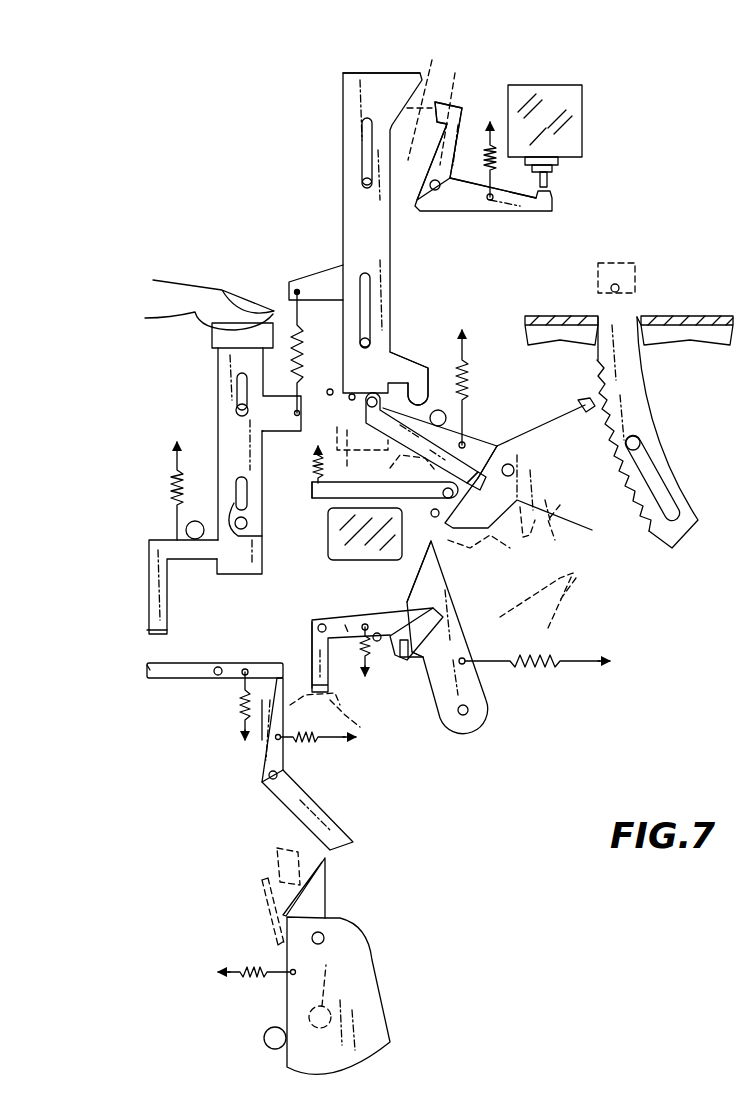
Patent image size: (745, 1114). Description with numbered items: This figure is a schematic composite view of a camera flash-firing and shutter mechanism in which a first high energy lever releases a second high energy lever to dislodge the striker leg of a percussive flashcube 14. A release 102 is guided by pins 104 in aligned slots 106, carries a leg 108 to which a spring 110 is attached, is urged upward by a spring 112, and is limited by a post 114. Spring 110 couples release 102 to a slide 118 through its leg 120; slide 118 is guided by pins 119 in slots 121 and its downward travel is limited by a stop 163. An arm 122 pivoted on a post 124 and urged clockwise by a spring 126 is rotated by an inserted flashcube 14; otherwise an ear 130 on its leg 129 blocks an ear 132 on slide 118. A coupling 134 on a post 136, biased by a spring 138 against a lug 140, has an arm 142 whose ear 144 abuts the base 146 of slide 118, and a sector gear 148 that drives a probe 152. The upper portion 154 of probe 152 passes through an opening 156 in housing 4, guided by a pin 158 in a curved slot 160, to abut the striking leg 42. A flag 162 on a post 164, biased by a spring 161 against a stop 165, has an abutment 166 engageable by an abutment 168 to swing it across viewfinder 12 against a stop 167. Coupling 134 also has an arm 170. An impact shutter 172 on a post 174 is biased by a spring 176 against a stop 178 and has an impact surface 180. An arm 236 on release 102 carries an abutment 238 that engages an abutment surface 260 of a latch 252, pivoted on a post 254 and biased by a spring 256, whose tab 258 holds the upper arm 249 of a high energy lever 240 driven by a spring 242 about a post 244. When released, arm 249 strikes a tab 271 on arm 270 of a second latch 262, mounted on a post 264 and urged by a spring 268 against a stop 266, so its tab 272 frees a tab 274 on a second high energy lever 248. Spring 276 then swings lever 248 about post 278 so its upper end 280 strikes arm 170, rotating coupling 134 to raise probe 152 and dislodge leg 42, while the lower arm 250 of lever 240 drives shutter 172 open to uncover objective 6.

The housing 4 is at (692, 314).
The objective 6 is at (330, 990).
The viewfinder 12 is at (273, 433).
The flashcube 14 is at (550, 95).
The striking leg 42 is at (620, 287).
The release 102 is at (212, 418).
The pins 104 is at (238, 404).
The slots 106 is at (232, 372).
The leg 108 is at (270, 428).
The spring 110 is at (297, 318).
The spring 112 is at (172, 485).
The post 114 is at (196, 520).
The slide 118 is at (358, 211).
The pins 119 is at (362, 184).
The leg 120 is at (318, 266).
The slots 121 is at (362, 128).
The arm 122 is at (460, 200).
The post 124 is at (436, 192).
The spring 126 is at (476, 152).
The leg 129 is at (493, 179).
The ear 130 is at (445, 112).
The ear 132 is at (412, 82).
The coupling 134 is at (532, 432).
The post 136 is at (510, 462).
The spring 138 is at (466, 386).
The lug 140 is at (442, 410).
The arm 142 is at (392, 430).
The ear 144 is at (366, 404).
The base 146 is at (352, 392).
The sector gear 148 is at (582, 398).
The probe 152 is at (626, 392).
The upper portion 154 is at (586, 312).
The opening 156 is at (640, 312).
The pin 158 is at (640, 440).
The slot 160 is at (666, 488).
The spring 161 is at (313, 468).
The flag 162 is at (336, 520).
The stop 163 is at (328, 380).
The post 164 is at (490, 479).
The stop 165 is at (310, 488).
The abutment 166 is at (452, 468).
The stop 167 is at (433, 518).
The abutment 168 is at (420, 380).
The arm 170 is at (501, 540).
The impact shutter 172 is at (378, 958).
The post 174 is at (326, 934).
The spring 176 is at (238, 982).
The stop 178 is at (262, 1040).
The impact surface 180 is at (322, 890).
The arm 236 is at (149, 582).
The abutment 238 is at (147, 634).
The high energy lever 240 is at (264, 758).
The spring 242 is at (326, 748).
The post 244 is at (268, 782).
The second high energy lever 248 is at (478, 686).
The upper arm 249 is at (262, 742).
The lower arm 250 is at (340, 830).
The latch 252 is at (180, 675).
The post 254 is at (216, 666).
The spring 256 is at (236, 710).
The tab 258 is at (316, 655).
The abutment surface 260 is at (146, 672).
The second latch 262 is at (365, 622).
The post 264 is at (325, 618).
The stop 266 is at (378, 633).
The spring 268 is at (374, 660).
The arm 270 is at (306, 640).
The tab 271 is at (395, 670).
The tab 272 is at (430, 604).
The tab 274 is at (420, 662).
The spring 276 is at (560, 655).
The post 278 is at (470, 714).
The upper end 280 is at (447, 560).